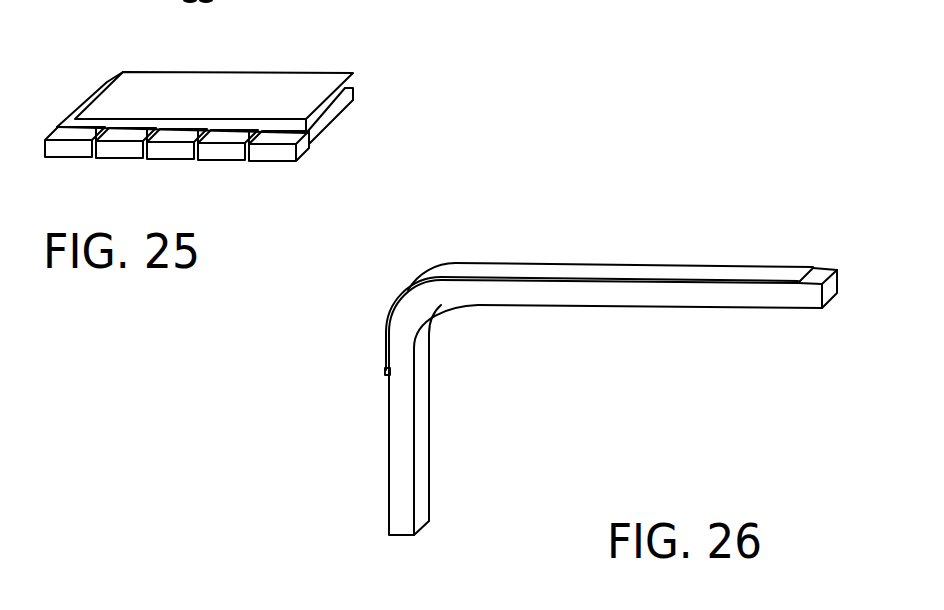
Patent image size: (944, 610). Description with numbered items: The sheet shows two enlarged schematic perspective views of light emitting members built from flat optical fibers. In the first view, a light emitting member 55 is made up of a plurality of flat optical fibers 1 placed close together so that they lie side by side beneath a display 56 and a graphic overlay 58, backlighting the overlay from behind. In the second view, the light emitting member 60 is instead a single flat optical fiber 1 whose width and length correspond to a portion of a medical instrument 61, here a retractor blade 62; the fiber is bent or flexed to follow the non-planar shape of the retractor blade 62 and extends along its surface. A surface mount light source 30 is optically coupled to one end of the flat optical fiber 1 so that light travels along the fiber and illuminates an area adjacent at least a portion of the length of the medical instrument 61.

In FIG. 25, the flat optical fiber 1 is at (242, 91).
In FIG. 26, the flat optical fiber 1 is at (643, 272).
In FIG. 25, the surface mount light source 30 is at (270, 162).
In FIG. 26, the surface mount light source 30 is at (385, 376).
In FIG. 25, the light emitting member 55 is at (175, 178).
In FIG. 25, the display 56 is at (116, 60).
In FIG. 25, the graphic overlay 58 is at (322, 85).
In FIG. 26, the light emitting member 60 is at (543, 354).
In FIG. 26, the medical instrument 61 is at (376, 446).
In FIG. 26, the retractor blade 62 is at (640, 297).